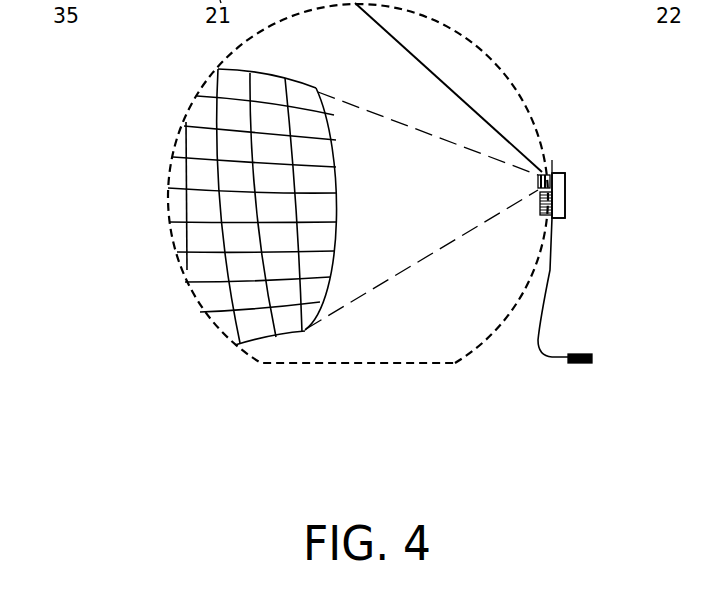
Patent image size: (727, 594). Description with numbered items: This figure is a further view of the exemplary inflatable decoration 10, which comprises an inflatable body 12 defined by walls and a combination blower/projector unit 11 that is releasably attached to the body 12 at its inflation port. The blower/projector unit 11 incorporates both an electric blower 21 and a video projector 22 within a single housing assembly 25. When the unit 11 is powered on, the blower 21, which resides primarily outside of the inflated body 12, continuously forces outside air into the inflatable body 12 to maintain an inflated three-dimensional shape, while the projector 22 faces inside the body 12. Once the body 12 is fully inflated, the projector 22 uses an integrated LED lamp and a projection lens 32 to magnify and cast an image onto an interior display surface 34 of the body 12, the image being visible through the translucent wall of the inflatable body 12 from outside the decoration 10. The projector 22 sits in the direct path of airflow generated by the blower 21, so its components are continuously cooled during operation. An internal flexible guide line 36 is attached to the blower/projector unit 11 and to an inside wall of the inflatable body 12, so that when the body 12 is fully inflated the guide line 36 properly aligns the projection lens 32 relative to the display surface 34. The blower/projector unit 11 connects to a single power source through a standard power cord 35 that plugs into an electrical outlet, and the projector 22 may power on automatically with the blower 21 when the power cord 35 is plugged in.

The decoration 10 is at (125, 174).
The blower/projector unit 11 is at (576, 163).
The inflatable body 12 is at (167, 232).
The electric blower 21 is at (565, 200).
The video projector 22 is at (532, 197).
The housing assembly 25 is at (552, 170).
The projection lens 32 is at (536, 184).
The interior display surface 34 is at (277, 88).
The power cord 35 is at (545, 305).
The internal flexible guide line 36 is at (448, 88).